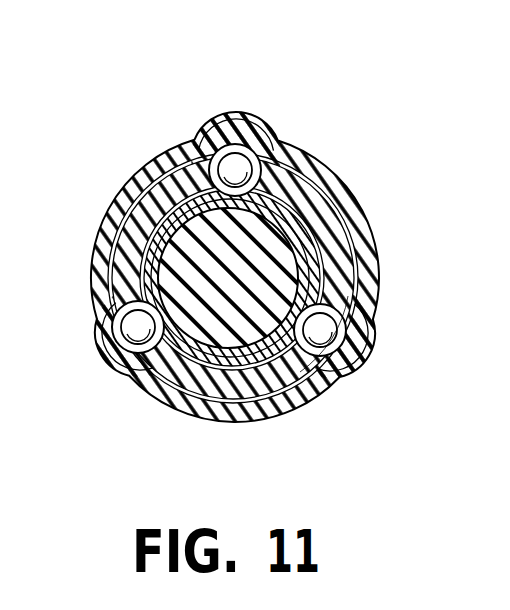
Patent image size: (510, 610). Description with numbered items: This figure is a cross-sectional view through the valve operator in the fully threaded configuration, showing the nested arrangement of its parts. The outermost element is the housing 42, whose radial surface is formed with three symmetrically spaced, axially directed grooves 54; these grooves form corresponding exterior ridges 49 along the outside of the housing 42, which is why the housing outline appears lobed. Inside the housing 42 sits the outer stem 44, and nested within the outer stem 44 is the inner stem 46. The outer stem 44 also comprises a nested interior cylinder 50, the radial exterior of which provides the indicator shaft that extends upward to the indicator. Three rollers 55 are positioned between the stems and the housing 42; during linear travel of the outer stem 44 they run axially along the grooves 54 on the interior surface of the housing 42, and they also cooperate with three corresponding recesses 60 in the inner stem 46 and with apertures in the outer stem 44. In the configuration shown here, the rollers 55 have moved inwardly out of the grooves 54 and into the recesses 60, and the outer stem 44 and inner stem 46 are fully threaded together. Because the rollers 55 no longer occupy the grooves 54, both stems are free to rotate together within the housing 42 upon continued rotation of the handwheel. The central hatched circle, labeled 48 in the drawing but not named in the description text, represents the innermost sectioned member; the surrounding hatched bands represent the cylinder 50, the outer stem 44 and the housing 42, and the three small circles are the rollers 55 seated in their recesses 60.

The housing 42 is at (341, 178).
The outer stem 44 is at (186, 373).
The inner stem 46 is at (278, 205).
The shaft 48 is at (208, 266).
The exterior ridges 49 is at (242, 112).
The nested interior cylinder 50 is at (150, 236).
The axially directed grooves 54 is at (235, 145).
The rollers 55 is at (348, 296).
The recesses 60 is at (305, 214).